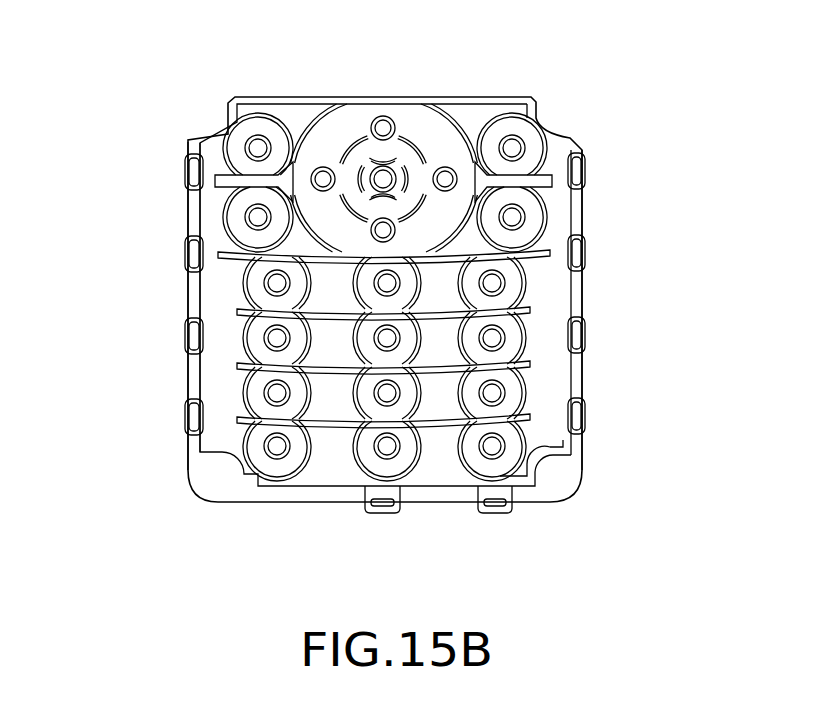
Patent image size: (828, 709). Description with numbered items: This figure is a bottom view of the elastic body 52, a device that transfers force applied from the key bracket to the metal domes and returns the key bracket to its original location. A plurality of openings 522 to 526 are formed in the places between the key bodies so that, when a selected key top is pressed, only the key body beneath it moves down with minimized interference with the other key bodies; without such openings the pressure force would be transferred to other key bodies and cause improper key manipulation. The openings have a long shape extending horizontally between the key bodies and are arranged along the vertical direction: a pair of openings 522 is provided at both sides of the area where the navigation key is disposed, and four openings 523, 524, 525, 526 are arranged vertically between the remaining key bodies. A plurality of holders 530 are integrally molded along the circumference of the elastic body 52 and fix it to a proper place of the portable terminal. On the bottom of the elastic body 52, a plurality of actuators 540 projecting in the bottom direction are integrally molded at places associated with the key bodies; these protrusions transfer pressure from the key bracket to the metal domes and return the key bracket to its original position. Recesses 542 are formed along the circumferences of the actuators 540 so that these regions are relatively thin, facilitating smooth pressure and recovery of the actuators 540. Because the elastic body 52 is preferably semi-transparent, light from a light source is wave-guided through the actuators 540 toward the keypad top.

The elastic body 52 is at (150, 309).
The openings 522 is at (220, 176).
The opening 523 is at (560, 228).
The opening 524 is at (528, 305).
The opening 525 is at (528, 362).
The opening 526 is at (528, 417).
The holders 530 is at (586, 170).
The actuators 540 is at (382, 116).
The recesses 542 is at (325, 128).